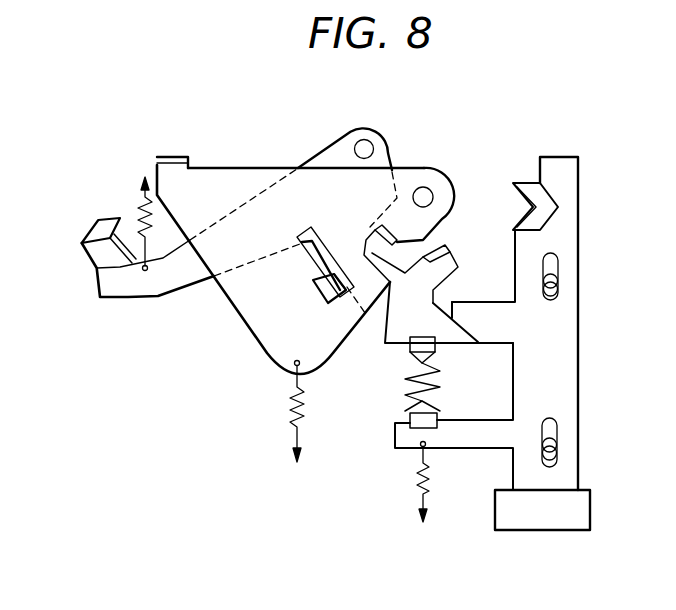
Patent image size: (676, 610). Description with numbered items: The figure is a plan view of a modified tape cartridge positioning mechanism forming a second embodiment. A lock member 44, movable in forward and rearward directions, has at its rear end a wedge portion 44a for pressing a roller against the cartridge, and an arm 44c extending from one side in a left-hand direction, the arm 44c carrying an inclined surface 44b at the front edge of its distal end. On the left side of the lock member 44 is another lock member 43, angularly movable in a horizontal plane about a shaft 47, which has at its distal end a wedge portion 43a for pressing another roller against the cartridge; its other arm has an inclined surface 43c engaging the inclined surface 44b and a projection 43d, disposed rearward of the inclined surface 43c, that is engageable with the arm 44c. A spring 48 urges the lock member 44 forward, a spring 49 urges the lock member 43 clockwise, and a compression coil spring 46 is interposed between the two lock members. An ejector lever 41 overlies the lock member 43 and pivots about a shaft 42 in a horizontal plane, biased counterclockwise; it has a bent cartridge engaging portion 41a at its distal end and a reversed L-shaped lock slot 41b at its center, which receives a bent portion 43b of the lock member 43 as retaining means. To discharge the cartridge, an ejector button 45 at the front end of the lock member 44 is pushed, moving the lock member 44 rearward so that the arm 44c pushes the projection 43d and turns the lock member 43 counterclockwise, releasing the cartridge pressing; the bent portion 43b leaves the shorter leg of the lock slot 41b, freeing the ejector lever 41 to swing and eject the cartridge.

The ejector lever 41 is at (251, 168).
The cartridge engaging portion 41a is at (180, 156).
The lock slot 41b is at (318, 262).
The shaft 42 is at (428, 187).
The lock member 43 is at (176, 293).
The wedge portion 43a is at (93, 232).
The bent portion 43b is at (320, 296).
The inclined surface 43c is at (447, 297).
The projection 43d is at (447, 258).
The lock member 44 is at (565, 345).
The wedge portion 44a is at (522, 185).
The inclined surface 44b is at (478, 340).
The arm 44c is at (499, 345).
The ejector button 45 is at (571, 528).
The compression coil spring 46 is at (408, 392).
The shaft 47 is at (370, 140).
The spring 48 is at (416, 489).
The spring 49 is at (140, 212).